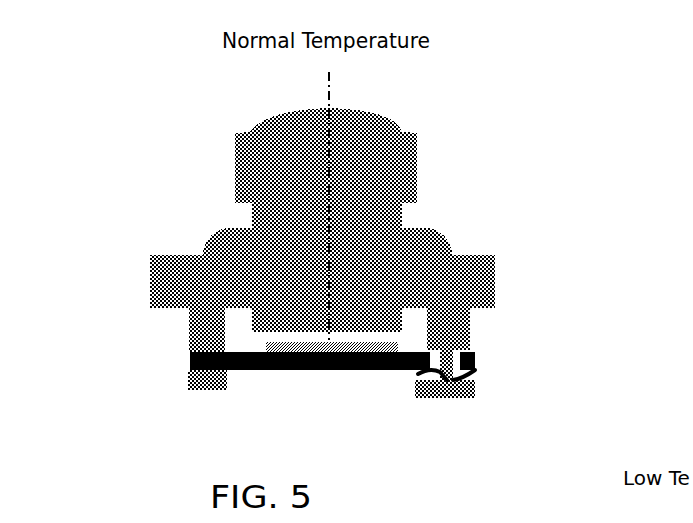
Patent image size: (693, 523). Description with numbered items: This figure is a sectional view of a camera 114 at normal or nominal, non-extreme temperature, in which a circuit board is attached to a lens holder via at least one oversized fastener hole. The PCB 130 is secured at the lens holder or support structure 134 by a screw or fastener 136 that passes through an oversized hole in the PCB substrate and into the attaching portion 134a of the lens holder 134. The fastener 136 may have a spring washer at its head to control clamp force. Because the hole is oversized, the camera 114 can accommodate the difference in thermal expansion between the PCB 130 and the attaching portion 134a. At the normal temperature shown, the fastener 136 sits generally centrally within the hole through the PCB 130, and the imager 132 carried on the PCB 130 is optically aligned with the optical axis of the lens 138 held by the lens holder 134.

The camera 114 is at (498, 173).
The PCB 130 is at (353, 370).
The imager 132 is at (303, 370).
The lens holder 134 is at (485, 272).
The attaching portion 134a is at (456, 326).
The fastener 136 is at (475, 395).
The lens 138 is at (350, 171).